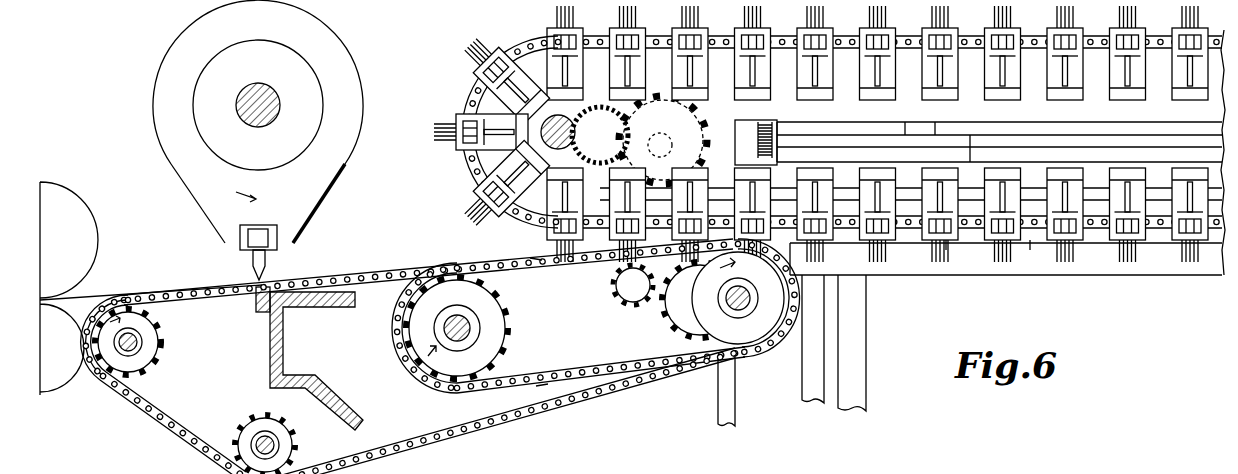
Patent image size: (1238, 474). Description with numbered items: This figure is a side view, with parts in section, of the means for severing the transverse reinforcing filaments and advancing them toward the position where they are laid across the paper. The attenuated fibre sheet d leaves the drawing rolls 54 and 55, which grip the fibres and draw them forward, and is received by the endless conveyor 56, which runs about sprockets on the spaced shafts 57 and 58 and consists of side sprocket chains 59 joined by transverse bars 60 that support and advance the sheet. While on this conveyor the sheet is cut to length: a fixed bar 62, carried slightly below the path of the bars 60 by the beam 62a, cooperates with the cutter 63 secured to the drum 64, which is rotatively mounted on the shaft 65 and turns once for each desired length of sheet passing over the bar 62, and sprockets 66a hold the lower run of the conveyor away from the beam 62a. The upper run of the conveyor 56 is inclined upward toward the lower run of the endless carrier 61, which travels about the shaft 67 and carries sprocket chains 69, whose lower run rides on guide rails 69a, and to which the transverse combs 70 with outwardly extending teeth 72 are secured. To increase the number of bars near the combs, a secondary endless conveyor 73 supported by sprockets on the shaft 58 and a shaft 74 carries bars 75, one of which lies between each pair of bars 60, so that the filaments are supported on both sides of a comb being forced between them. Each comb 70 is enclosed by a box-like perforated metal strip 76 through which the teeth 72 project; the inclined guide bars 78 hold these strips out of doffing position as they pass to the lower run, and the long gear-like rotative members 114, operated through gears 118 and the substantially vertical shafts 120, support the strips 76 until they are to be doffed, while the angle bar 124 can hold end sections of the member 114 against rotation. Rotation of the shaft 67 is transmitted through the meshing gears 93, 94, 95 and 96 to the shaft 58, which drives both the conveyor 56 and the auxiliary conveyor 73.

The drawing roll 54 is at (92, 226).
The drawing roll 55 is at (62, 359).
The endless conveyor 56 is at (404, 434).
The shaft 57 is at (140, 342).
The shaft 58 is at (742, 302).
The sprocket chain 59 is at (356, 292).
The bar 60 is at (160, 418).
The endless carrier 61 is at (903, 32).
The fixed bar 62 is at (250, 314).
The beam 62a is at (283, 337).
The cutter 63 is at (268, 268).
The drum 64 is at (363, 105).
The shaft 65 is at (245, 106).
The sprocket 66a is at (302, 440).
The shaft 67 is at (462, 172).
The sprocket chain 69 is at (978, 244).
The guide rail 69a is at (1062, 275).
The comb 70 is at (1010, 37).
The teeth 72 is at (1168, 262).
The secondary endless conveyor 73 is at (588, 372).
The shaft 74 is at (478, 328).
The bar 75 is at (536, 258).
The metal strip 76 is at (948, 242).
The inclined guide bar 78 is at (569, 139).
The gear 93 is at (600, 134).
The gear 94 is at (700, 112).
The gear 95 is at (632, 297).
The gear 96 is at (688, 318).
The rotative member 114 is at (1098, 147).
The gear 118 is at (768, 130).
The vertical shaft 120 is at (818, 349).
The angle bar 124 is at (932, 137).
The sheet d is at (108, 293).